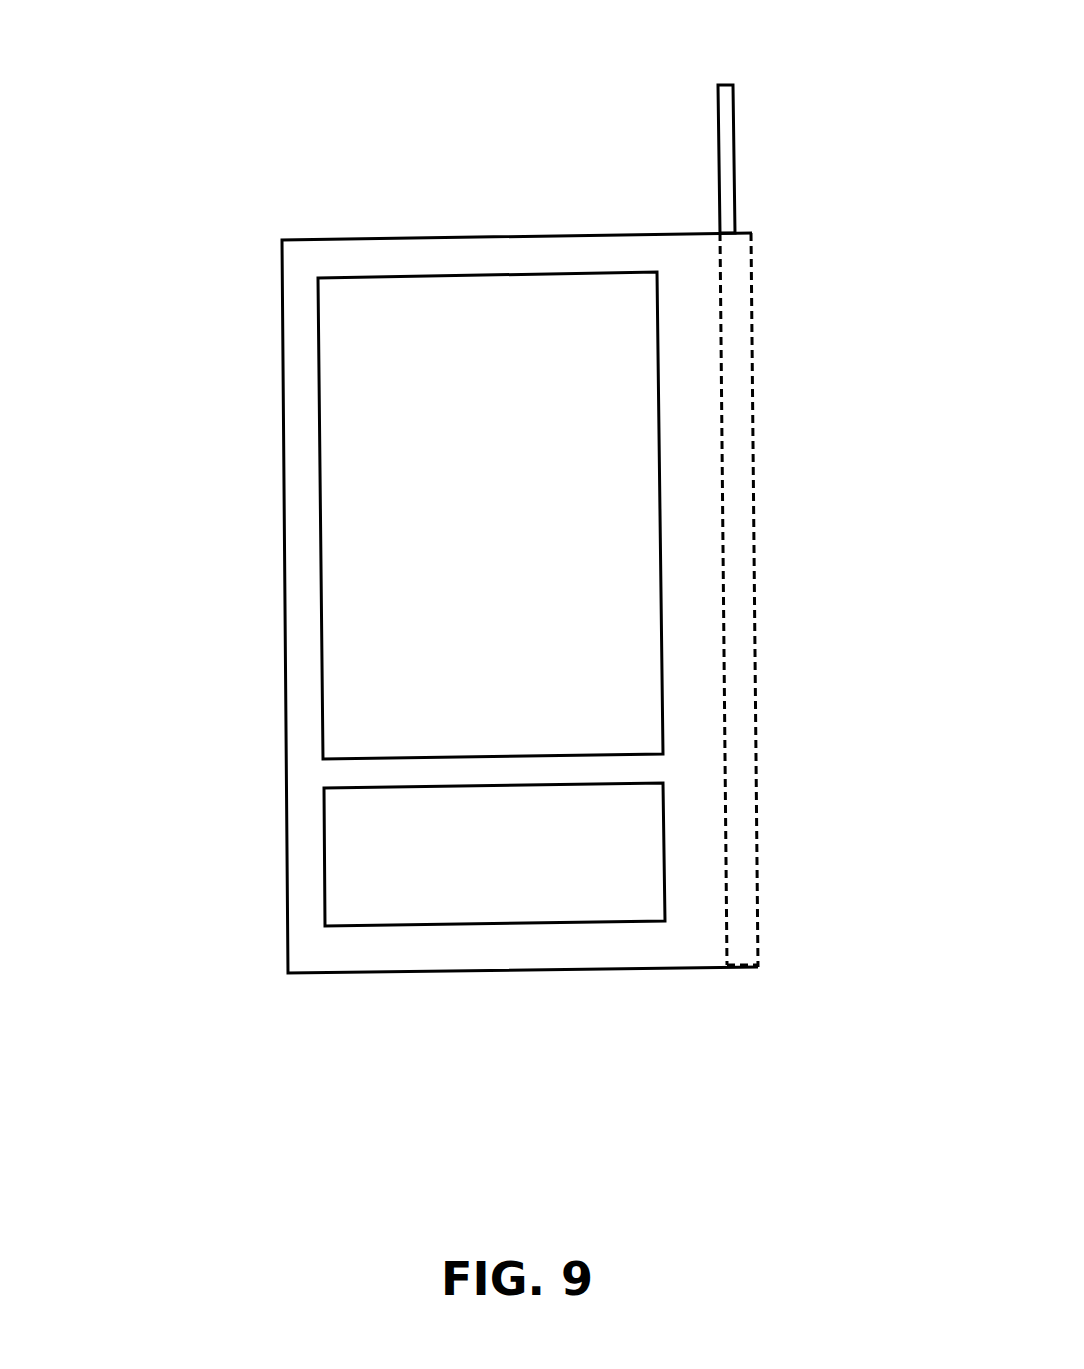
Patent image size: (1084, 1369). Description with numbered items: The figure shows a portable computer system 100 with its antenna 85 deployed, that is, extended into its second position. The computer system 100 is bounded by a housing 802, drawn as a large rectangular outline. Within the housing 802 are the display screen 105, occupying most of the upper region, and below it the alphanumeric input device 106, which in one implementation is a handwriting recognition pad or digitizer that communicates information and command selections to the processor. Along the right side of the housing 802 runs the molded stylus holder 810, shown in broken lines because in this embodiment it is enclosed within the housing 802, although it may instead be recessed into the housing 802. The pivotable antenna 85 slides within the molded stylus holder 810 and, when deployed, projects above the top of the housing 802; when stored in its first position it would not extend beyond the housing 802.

The portable computer system 100 is at (349, 35).
The antenna 85 is at (576, 159).
The housing 802 is at (278, 480).
The display screen 105 is at (518, 528).
The alphanumeric input device 106 is at (518, 866).
The molded stylus holder 810 is at (768, 594).